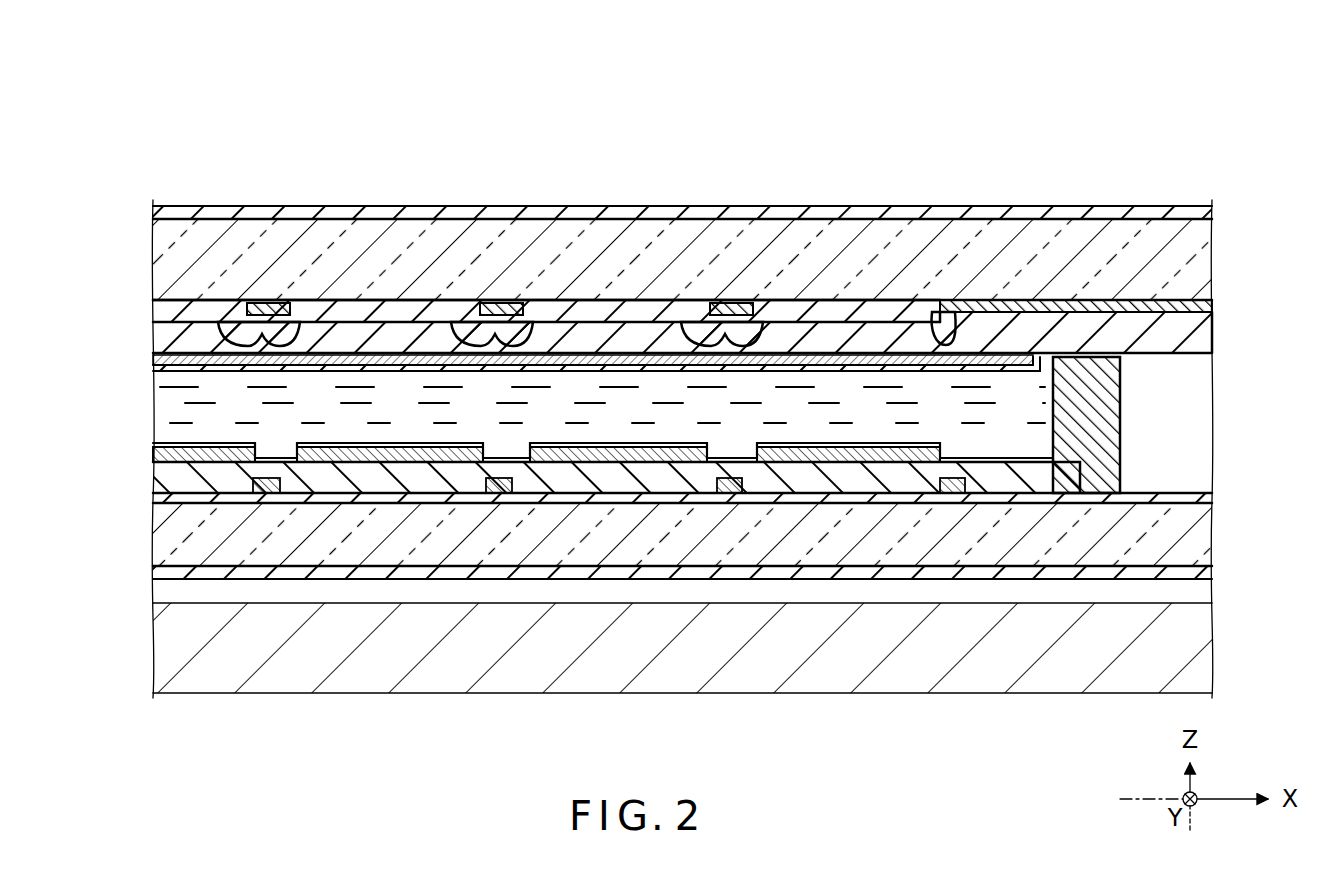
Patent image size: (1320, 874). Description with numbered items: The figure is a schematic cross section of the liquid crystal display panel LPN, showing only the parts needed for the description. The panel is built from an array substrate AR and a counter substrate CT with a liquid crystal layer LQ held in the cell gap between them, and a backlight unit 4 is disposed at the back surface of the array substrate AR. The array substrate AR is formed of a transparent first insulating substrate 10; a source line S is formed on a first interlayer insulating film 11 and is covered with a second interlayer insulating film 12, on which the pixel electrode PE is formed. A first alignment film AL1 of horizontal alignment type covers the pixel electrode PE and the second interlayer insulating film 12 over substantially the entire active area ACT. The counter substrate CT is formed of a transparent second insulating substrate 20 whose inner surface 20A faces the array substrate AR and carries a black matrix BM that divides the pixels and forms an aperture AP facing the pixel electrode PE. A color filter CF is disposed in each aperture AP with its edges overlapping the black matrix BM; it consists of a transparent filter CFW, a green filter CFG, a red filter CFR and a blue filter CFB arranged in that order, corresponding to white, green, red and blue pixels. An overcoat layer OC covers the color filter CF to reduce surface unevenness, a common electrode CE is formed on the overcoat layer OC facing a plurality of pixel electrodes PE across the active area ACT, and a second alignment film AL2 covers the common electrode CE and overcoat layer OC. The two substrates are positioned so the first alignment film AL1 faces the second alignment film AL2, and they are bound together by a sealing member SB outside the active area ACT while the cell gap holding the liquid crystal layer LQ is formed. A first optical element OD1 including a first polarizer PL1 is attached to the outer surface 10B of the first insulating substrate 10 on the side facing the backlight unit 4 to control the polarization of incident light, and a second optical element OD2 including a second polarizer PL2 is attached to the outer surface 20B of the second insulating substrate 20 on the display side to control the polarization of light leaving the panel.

The liquid crystal display panel LPN is at (1224, 234).
The counter substrate CT is at (144, 268).
The array substrate AR is at (144, 532).
The liquid crystal layer LQ is at (163, 432).
The active area ACT is at (953, 300).
The aperture AP is at (713, 300).
The outer surface of the second insulating substrate 20B is at (188, 203).
The second optical element OD2 is at (632, 216).
The second polarizer PL2 is at (152, 212).
The second insulating substrate 20 is at (1203, 258).
The color filter CF is at (165, 310).
The transparent filter CFW is at (210, 300).
The green filter CFG is at (398, 300).
The red filter CFR is at (598, 300).
The blue filter CFB is at (888, 300).
The black matrix BM is at (277, 303).
The overcoat layer OC is at (1207, 343).
The inner surface of the second insulating substrate 20A is at (180, 314).
The common electrode CE is at (153, 361).
The second alignment film AL2 is at (1045, 371).
The sealing member SB is at (1107, 420).
The first alignment film AL1 is at (1053, 449).
The pixel electrode PE is at (386, 462).
The second interlayer insulating film 12 is at (160, 478).
The source line S is at (268, 493).
The first interlayer insulating film 11 is at (1210, 495).
The first insulating substrate 10 is at (1203, 542).
The first optical element OD1 is at (632, 578).
The first polarizer PL1 is at (163, 573).
The outer surface of the first insulating substrate 10B is at (190, 579).
The backlight unit 4 is at (162, 657).